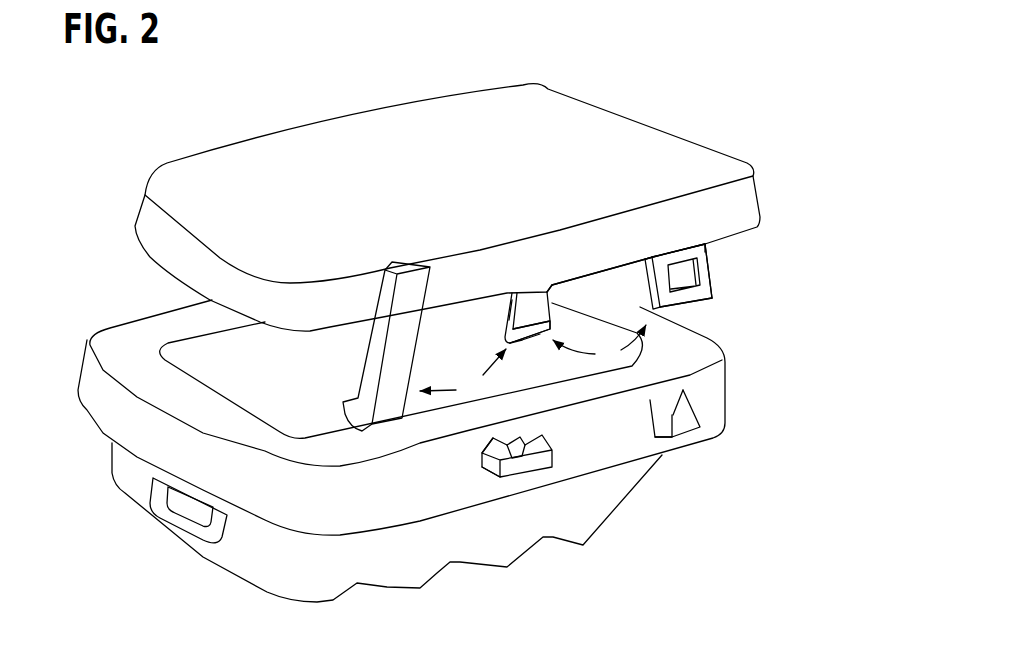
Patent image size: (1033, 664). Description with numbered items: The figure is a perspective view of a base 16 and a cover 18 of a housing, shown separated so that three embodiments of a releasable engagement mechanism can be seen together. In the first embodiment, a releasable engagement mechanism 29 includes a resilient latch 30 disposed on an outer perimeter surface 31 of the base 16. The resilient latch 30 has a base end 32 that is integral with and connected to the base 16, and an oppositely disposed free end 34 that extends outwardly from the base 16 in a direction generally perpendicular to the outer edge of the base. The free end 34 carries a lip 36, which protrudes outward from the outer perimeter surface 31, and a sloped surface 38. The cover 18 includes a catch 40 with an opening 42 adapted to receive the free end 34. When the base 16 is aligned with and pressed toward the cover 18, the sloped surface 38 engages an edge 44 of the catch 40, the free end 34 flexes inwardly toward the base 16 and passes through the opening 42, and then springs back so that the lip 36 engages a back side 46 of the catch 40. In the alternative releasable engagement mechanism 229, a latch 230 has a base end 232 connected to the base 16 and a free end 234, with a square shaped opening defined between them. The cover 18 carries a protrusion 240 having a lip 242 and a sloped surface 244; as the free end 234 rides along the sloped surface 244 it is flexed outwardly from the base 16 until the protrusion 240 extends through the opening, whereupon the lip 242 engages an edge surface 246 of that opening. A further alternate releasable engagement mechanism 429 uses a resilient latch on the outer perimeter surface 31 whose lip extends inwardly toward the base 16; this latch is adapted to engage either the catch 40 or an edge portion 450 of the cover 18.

The base 16 is at (670, 121).
The cover 18 is at (736, 391).
The releasable engagement mechanism 29 is at (560, 297).
The resilient latch 30 is at (542, 354).
The outer perimeter surface 31 is at (658, 242).
The base end 32 is at (533, 298).
The free end 34 is at (507, 320).
The lip 36 is at (549, 324).
The sloped surface 38 is at (522, 342).
The catch 40 is at (565, 448).
The opening 42 is at (517, 447).
The edge 44 is at (483, 442).
The back side 46 is at (490, 473).
The releasable engagement mechanism 229 is at (690, 245).
The latch 230 is at (716, 264).
The base end 232 is at (704, 250).
The free end 234 is at (702, 302).
The protrusion 240 is at (694, 410).
The lip 242 is at (683, 433).
The sloped surface 244 is at (683, 390).
The edge surface 246 is at (683, 287).
The releasable engagement mechanism 429 is at (349, 360).
The edge portion 450 is at (363, 530).